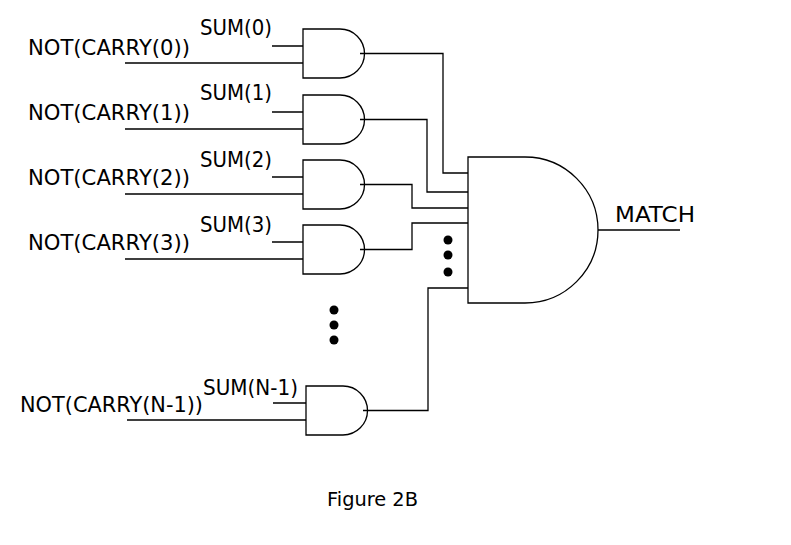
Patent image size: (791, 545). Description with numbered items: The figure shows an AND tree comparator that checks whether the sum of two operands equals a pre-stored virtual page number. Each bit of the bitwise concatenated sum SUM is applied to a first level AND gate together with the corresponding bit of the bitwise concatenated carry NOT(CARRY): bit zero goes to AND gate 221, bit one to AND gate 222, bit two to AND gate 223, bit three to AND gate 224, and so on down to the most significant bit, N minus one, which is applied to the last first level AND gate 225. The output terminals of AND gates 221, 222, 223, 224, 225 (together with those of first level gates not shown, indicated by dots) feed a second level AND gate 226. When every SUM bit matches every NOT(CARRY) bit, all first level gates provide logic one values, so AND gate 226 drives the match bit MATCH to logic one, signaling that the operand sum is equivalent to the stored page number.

The first level AND gate 221 is at (350, 63).
The first level AND gate 222 is at (350, 129).
The first level AND gate 223 is at (350, 194).
The first level AND gate 224 is at (350, 259).
The last first level AND gate 225 is at (353, 420).
The second level AND gate 226 is at (550, 233).